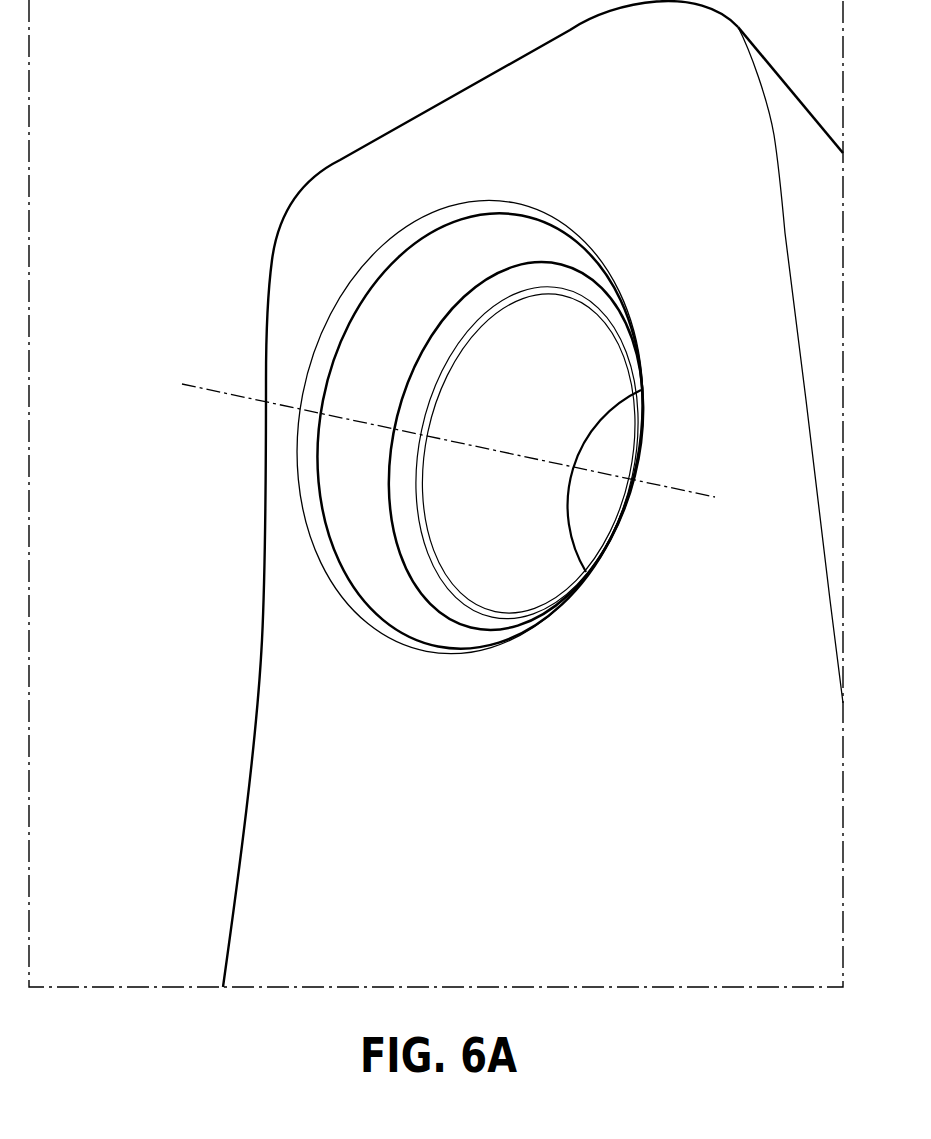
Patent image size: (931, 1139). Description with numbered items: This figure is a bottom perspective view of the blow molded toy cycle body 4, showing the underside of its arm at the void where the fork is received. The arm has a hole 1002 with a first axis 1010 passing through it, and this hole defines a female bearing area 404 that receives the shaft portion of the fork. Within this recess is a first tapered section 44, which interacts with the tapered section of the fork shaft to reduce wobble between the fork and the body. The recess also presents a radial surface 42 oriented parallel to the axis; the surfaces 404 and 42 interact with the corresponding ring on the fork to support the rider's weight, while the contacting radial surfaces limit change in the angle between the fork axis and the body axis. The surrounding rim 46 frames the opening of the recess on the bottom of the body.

The housing body 4 is at (308, 238).
The bezel ring 46 is at (315, 372).
The female bearing area 404 is at (348, 480).
The first tapered section 44 is at (455, 526).
The second radial surface 42 is at (440, 589).
The hole 1002 is at (622, 455).
The first axis 1010 is at (200, 388).